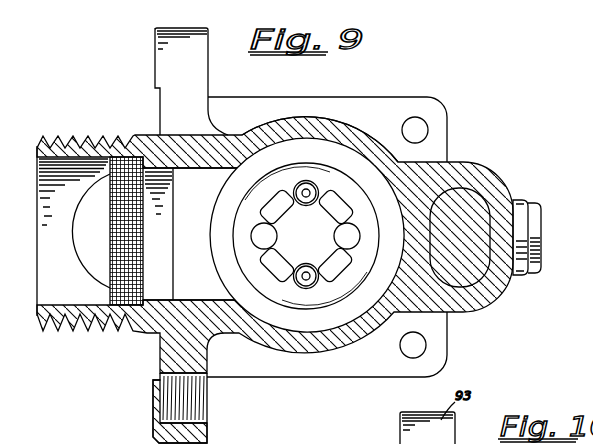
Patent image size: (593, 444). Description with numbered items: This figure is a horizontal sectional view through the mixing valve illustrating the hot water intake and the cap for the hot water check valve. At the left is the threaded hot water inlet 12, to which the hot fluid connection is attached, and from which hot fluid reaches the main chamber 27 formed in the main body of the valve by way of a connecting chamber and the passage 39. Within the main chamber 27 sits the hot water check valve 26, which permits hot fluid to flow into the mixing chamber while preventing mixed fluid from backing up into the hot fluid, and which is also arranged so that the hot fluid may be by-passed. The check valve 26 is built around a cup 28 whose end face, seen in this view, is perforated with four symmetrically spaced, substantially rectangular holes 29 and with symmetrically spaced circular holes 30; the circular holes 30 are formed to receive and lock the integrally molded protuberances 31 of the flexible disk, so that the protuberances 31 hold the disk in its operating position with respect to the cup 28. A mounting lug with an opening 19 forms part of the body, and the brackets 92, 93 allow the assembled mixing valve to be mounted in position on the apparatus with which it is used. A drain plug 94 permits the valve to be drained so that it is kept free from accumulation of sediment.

The hot water inlet 12 is at (79, 308).
The mounting lug opening 19 is at (488, 240).
The hot water check valve 26 is at (90, 268).
The main chamber 27 is at (266, 152).
The cup 28 is at (220, 207).
The holes 29 is at (268, 212).
The holes 30 is at (296, 258).
The protuberances 31 is at (316, 182).
The passage 39 is at (188, 300).
The bracket 92 is at (206, 432).
The bracket 93 is at (192, 38).
The drain plug 94 is at (537, 262).